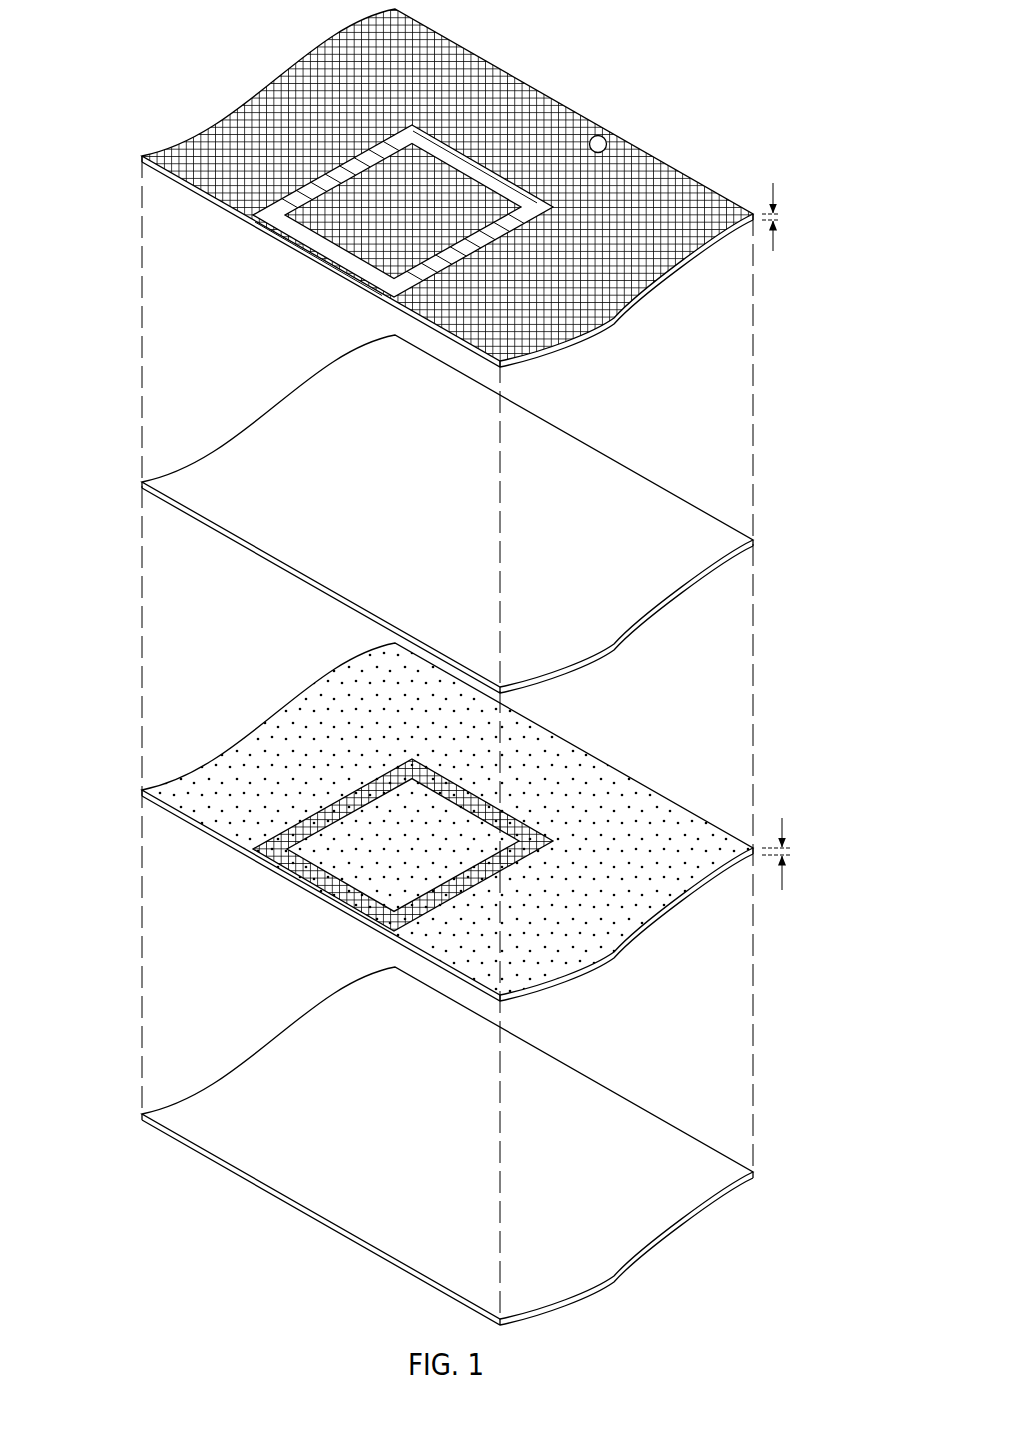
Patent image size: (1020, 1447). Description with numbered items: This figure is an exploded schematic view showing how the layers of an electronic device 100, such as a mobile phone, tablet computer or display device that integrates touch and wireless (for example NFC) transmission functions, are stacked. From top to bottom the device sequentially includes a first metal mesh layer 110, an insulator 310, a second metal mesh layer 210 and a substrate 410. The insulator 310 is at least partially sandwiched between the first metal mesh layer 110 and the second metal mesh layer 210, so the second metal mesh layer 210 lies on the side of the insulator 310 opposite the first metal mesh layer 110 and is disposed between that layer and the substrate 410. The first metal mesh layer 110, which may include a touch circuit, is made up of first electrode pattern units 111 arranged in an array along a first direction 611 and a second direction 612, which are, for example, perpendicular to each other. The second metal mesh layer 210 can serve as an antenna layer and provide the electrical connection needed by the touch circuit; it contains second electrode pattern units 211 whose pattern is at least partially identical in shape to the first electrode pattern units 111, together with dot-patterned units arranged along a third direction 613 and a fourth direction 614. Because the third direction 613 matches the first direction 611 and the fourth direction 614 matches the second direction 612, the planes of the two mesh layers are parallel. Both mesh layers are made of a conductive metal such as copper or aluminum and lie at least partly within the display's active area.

The electronic device 100 is at (159, 28).
The first metal mesh layer 110 is at (400, 188).
The first electrode pattern units 111 is at (599, 135).
The second direction 612 is at (40, 213).
The first direction 611 is at (38, 213).
The insulator 310 is at (734, 526).
The second metal mesh layer 210 is at (395, 822).
The second electrode pattern units 211 is at (392, 845).
The fourth direction 614 is at (40, 845).
The third direction 613 is at (38, 845).
The substrate 410 is at (727, 1155).